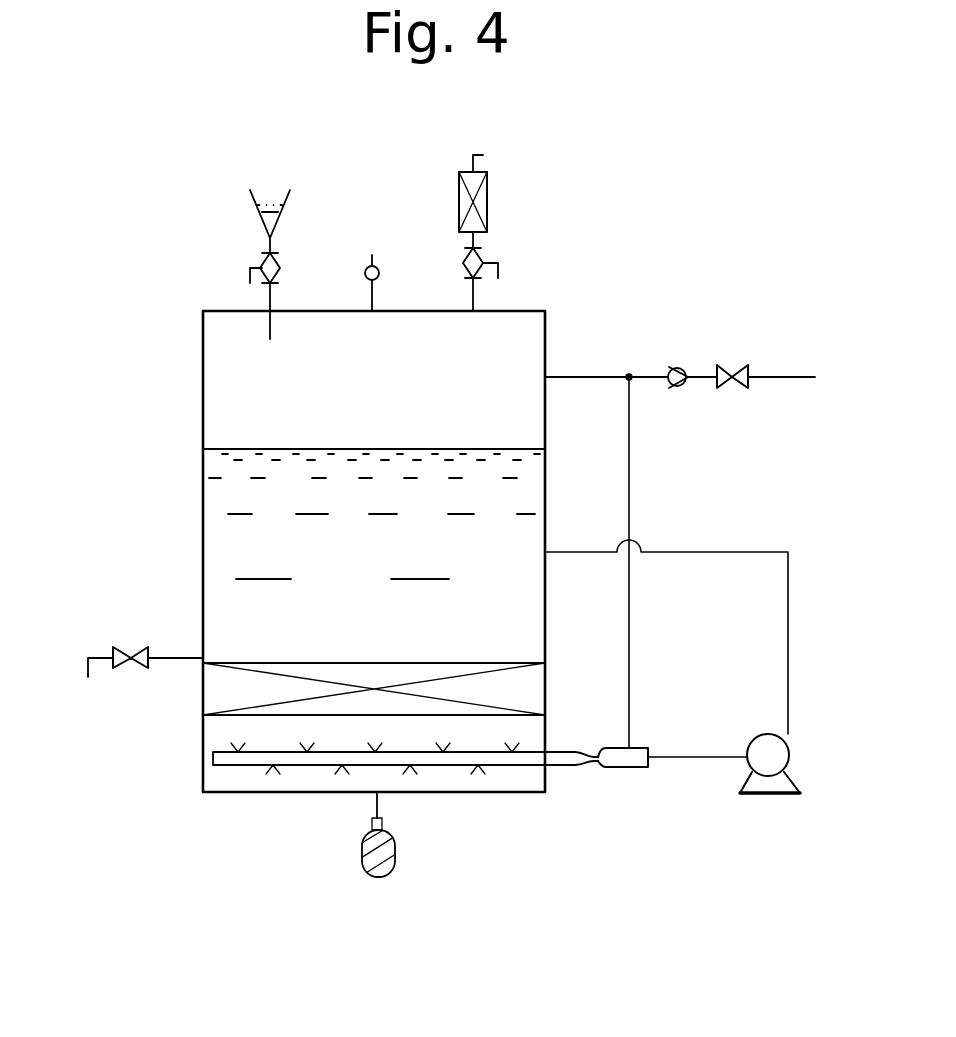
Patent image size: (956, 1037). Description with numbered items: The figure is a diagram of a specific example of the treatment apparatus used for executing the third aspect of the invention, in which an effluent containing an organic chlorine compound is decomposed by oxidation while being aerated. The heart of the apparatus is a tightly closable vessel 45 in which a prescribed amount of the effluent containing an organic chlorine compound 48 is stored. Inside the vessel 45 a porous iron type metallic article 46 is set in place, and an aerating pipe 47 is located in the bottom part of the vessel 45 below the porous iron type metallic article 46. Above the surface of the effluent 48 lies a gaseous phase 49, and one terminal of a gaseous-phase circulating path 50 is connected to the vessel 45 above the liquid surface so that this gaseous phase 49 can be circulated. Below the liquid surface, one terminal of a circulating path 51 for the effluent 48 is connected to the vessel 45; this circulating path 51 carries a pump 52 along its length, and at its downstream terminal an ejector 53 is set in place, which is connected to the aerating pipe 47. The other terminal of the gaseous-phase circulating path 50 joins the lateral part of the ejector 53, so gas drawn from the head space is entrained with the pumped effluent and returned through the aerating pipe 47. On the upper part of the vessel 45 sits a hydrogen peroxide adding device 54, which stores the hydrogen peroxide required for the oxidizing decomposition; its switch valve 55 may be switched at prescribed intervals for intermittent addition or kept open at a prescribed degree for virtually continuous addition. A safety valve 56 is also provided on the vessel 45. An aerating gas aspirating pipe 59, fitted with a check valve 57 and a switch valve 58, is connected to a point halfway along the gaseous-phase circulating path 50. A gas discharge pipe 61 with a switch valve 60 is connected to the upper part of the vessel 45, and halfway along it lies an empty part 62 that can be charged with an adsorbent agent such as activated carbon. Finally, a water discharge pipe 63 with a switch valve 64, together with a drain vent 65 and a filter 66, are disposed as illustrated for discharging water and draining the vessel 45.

The tightly closable vessel 45 is at (203, 357).
The porous iron type metallic article 46 is at (213, 692).
The aerating pipe 47 is at (213, 761).
The effluent containing an organic chlorine compound 48 is at (215, 542).
The gaseous phase 49 is at (213, 423).
The gaseous-phase circulating path 50 is at (630, 485).
The circulating path for effluent 51 is at (712, 552).
The pump 52 is at (756, 738).
The ejector 53 is at (625, 767).
The hydrogen peroxide adding device 54 is at (255, 210).
The switch valve 55 is at (263, 265).
The safety valve 56 is at (371, 266).
The check valve 57 is at (677, 367).
The switch valve 58 is at (733, 388).
The aerating gas aspirating pipe 59 is at (793, 377).
The switch valve 60 is at (482, 258).
The gas discharge pipe 61 is at (483, 155).
The empty part 62 is at (489, 187).
The water discharge pipe 63 is at (178, 658).
The switch valve 64 is at (118, 647).
The drain vent 65 is at (383, 805).
The filter 66 is at (395, 855).